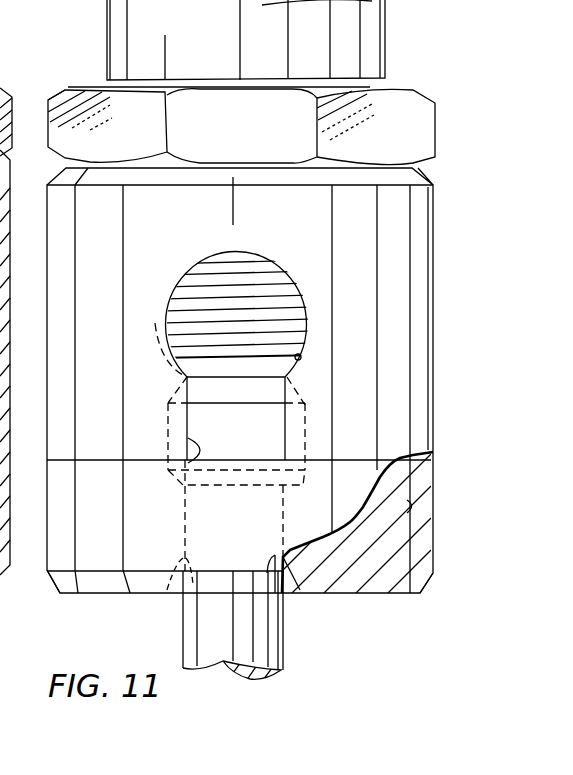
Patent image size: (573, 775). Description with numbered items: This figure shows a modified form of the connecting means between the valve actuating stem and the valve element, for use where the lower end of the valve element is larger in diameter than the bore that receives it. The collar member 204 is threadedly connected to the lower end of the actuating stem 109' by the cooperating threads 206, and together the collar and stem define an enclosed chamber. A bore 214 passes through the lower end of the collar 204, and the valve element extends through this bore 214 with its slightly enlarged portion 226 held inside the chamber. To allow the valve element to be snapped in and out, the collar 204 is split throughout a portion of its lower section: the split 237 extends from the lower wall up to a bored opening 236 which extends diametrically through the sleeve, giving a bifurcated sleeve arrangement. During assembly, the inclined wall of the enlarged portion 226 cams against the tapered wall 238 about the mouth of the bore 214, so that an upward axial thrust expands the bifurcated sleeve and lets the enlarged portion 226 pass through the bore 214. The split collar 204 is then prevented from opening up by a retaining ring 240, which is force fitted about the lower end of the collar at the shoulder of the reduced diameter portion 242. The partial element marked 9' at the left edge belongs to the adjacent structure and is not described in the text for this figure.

The adjacent ball joint 9' is at (9, 296).
The actuating stem 109' is at (218, 40).
The collar member 204 is at (345, 584).
The cooperating threads 206 is at (263, 283).
The bore 214 is at (185, 587).
The enlarged portion 226 is at (155, 323).
The bored opening 236 is at (298, 360).
The split 237 is at (192, 458).
The tapered wall 238 is at (287, 594).
The retaining ring 240 is at (58, 559).
The reduced diameter portion 242 is at (393, 528).